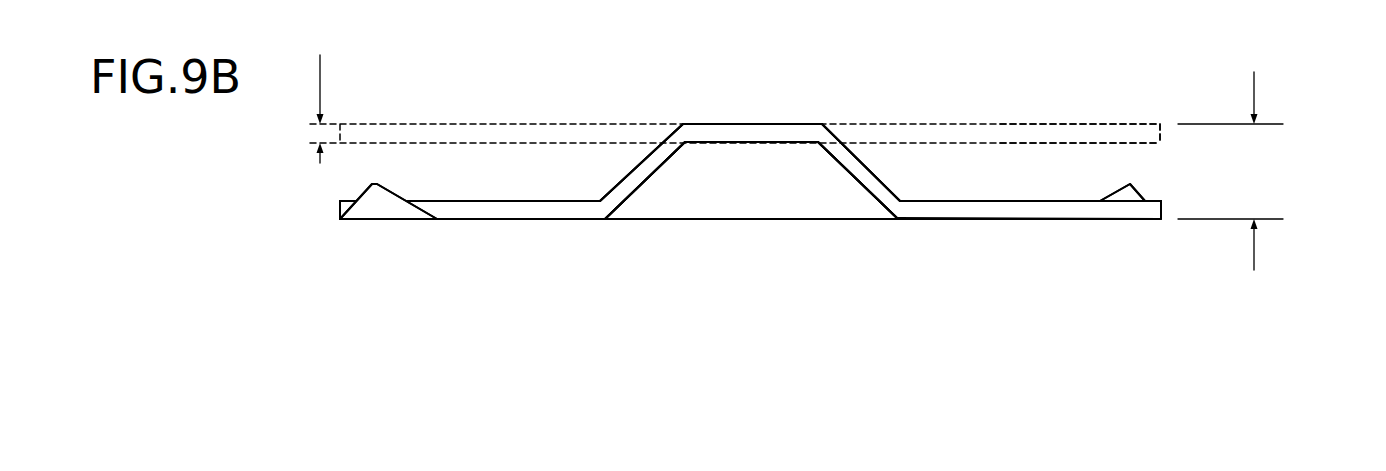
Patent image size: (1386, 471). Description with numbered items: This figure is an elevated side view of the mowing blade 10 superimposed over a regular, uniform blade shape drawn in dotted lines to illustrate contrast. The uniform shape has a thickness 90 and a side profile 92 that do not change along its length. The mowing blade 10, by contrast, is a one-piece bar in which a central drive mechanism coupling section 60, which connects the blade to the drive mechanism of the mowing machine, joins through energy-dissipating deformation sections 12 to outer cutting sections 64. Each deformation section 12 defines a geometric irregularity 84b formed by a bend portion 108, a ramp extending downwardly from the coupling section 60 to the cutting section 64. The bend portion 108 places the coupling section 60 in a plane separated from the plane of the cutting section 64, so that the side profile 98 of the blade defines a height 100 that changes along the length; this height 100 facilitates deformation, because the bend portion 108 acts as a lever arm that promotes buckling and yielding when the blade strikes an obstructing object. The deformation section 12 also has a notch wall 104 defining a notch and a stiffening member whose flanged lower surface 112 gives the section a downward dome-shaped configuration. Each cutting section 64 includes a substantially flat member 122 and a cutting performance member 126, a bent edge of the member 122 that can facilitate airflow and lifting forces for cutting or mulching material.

The mowing blade 10 is at (306, 260).
The energy-dissipating deformation section 12 is at (836, 168).
The drive mechanism coupling section 60 is at (755, 123).
The cutting section 64 is at (433, 222).
The geometric irregularity 84b is at (760, 208).
The thickness 90 is at (378, 12).
The side profile 92 is at (1131, 151).
The side profile 98 is at (1010, 263).
The height 100 is at (1267, 318).
The notch wall 104 is at (658, 168).
The bend portion 108 is at (622, 182).
The flanged lower surface 112 is at (664, 168).
The substantially flat member 122 is at (492, 210).
The cutting performance member 126 is at (378, 203).